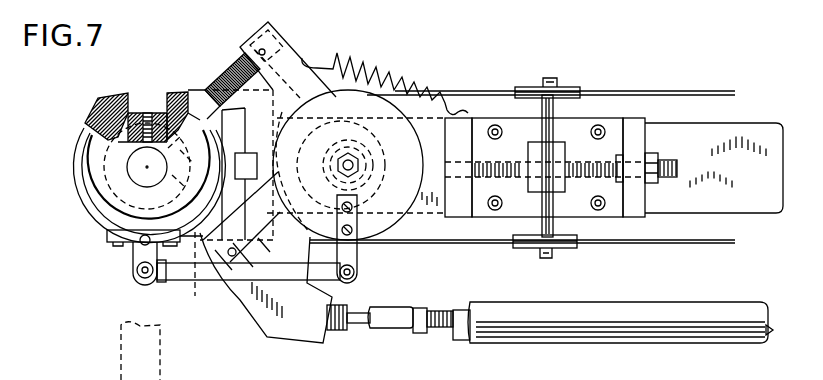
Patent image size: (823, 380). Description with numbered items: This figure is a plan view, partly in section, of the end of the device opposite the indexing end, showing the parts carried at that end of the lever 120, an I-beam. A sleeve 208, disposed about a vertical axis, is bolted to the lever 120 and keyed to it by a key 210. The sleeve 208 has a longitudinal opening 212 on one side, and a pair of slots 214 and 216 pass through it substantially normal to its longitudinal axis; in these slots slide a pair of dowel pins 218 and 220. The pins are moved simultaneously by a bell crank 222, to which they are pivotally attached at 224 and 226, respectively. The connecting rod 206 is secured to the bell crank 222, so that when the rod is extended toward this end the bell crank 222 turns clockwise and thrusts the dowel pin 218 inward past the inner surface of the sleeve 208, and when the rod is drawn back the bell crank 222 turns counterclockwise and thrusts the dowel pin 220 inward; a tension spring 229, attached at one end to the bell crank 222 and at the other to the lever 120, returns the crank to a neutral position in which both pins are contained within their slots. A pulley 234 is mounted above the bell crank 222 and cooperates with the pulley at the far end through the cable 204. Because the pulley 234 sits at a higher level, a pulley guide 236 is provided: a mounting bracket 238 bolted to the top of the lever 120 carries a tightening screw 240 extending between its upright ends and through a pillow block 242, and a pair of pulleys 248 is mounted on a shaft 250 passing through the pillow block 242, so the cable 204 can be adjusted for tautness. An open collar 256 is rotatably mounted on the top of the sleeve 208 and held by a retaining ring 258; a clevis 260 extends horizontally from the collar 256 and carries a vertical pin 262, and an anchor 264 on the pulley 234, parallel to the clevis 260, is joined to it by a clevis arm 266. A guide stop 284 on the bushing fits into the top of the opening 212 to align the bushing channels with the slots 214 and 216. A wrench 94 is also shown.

The wrench 94 is at (122, 350).
The lever 120 is at (752, 208).
The cable 204 is at (688, 245).
The connecting rod 206 is at (690, 335).
The sleeve 208 is at (100, 100).
The key 210 is at (253, 163).
The longitudinal opening 212 is at (142, 113).
The slot 214 is at (195, 288).
The slot 216 is at (200, 90).
The dowel pin 218 is at (270, 322).
The dowel pin 220 is at (223, 77).
The bell crank 222 is at (275, 326).
The pivotal attachment 224 is at (240, 252).
The pivotal attachment 226 is at (266, 50).
The tension spring 229 is at (387, 72).
The pulley 234 is at (382, 223).
The pulley guide 236 is at (624, 104).
The mounting bracket 238 is at (608, 215).
The tightening screw 240 is at (672, 165).
The pillow block 242 is at (530, 148).
The pulleys 248 is at (578, 90).
The shaft 250 is at (538, 208).
The open collar 256 is at (72, 178).
The retaining ring 258 is at (83, 158).
The clevis 260 is at (107, 234).
The vertical pin 262 is at (139, 245).
The anchor 264 is at (357, 252).
The clevis arm 266 is at (183, 273).
The guide stop 284 is at (98, 118).